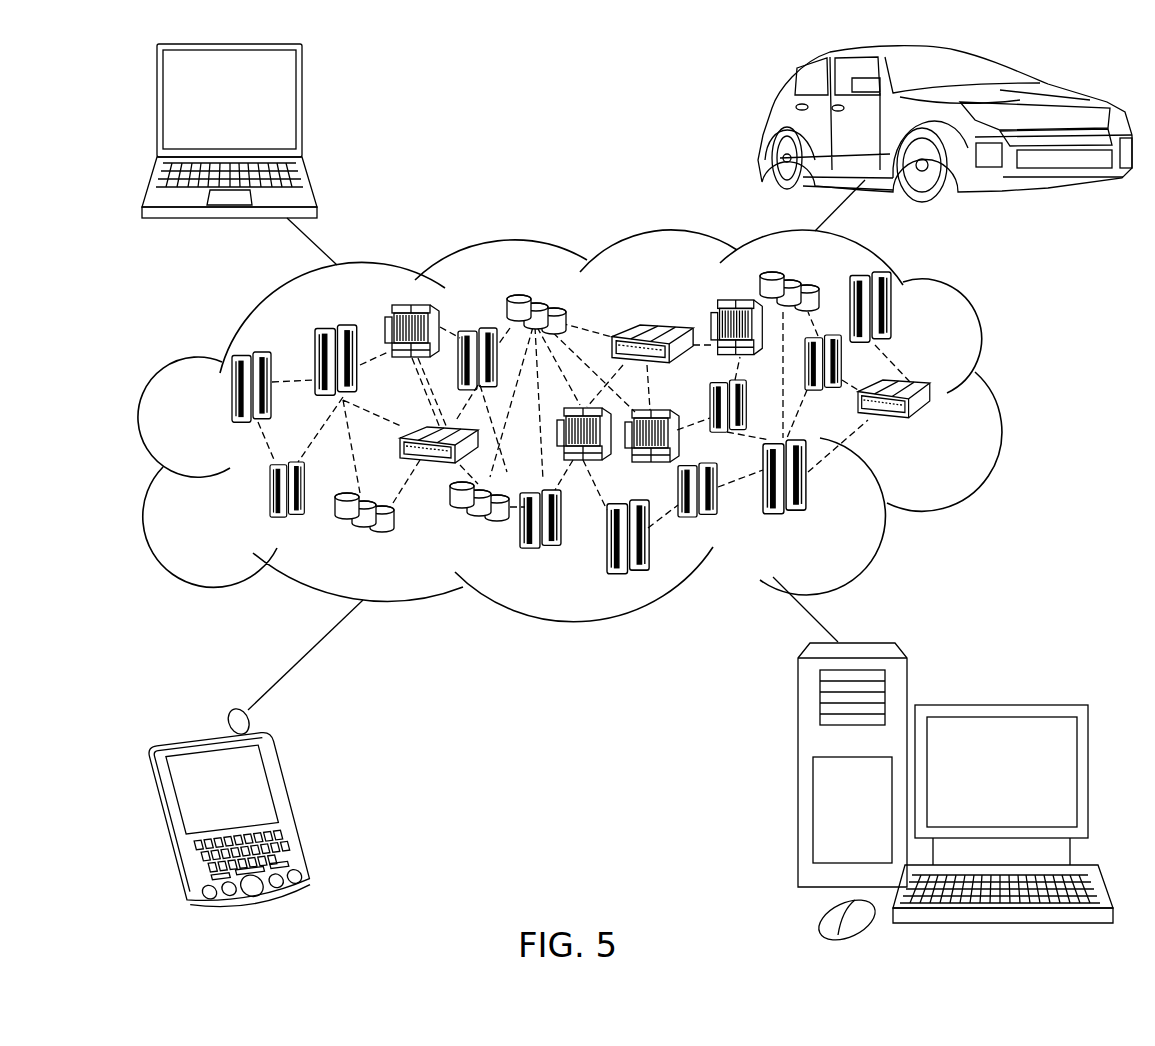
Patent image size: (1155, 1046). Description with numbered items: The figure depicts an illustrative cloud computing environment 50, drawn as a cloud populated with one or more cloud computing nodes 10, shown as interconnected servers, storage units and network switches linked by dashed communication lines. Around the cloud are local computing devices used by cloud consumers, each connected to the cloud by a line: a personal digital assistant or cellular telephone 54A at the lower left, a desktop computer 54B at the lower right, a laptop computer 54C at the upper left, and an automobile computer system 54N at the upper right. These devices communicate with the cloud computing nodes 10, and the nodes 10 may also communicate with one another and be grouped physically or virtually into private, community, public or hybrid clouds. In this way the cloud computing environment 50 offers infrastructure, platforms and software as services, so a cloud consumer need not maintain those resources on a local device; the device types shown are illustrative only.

The cloud computing node 10 is at (940, 431).
The cloud computing environment 50 is at (997, 398).
The personal digital assistant or cellular telephone 54A is at (290, 803).
The desktop computer 54B is at (999, 705).
The laptop computer 54C is at (302, 108).
The automobile computer system 54N is at (767, 124).